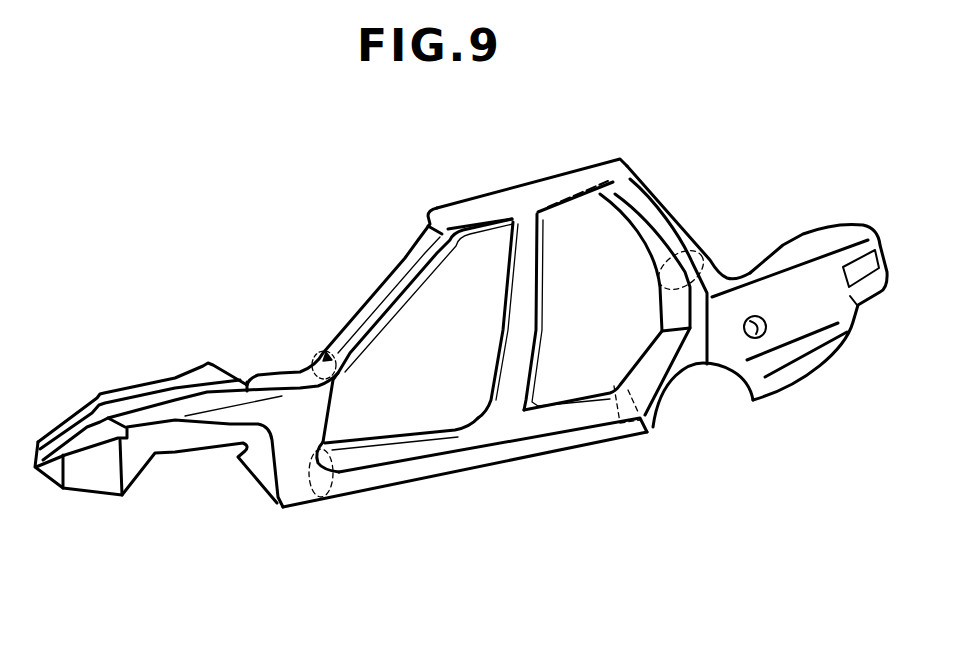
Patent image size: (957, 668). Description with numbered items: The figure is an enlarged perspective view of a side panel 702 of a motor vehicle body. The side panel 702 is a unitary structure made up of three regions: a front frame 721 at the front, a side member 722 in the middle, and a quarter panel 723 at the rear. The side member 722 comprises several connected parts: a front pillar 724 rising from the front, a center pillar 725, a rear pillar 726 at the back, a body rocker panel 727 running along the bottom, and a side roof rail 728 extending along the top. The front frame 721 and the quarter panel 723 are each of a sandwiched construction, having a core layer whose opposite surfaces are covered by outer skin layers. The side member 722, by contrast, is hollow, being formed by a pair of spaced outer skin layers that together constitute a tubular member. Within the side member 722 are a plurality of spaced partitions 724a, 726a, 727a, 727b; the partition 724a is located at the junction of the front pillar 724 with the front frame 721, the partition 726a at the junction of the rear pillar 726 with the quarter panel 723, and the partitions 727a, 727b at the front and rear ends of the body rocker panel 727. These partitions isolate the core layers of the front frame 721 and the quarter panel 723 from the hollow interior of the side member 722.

The side panel 702 is at (556, 476).
The front frame 721 is at (206, 331).
The side member 722 is at (614, 127).
The quarter panel 723 is at (854, 187).
The front pillar 724 is at (371, 292).
The partition 724a is at (326, 350).
The center pillar 725 is at (530, 302).
The rear pillar 726 is at (664, 208).
The partition 726a is at (702, 252).
The body rocker panel 727 is at (421, 474).
The partition 727a is at (323, 497).
The partition 727b is at (640, 433).
The side roof rail 728 is at (510, 200).